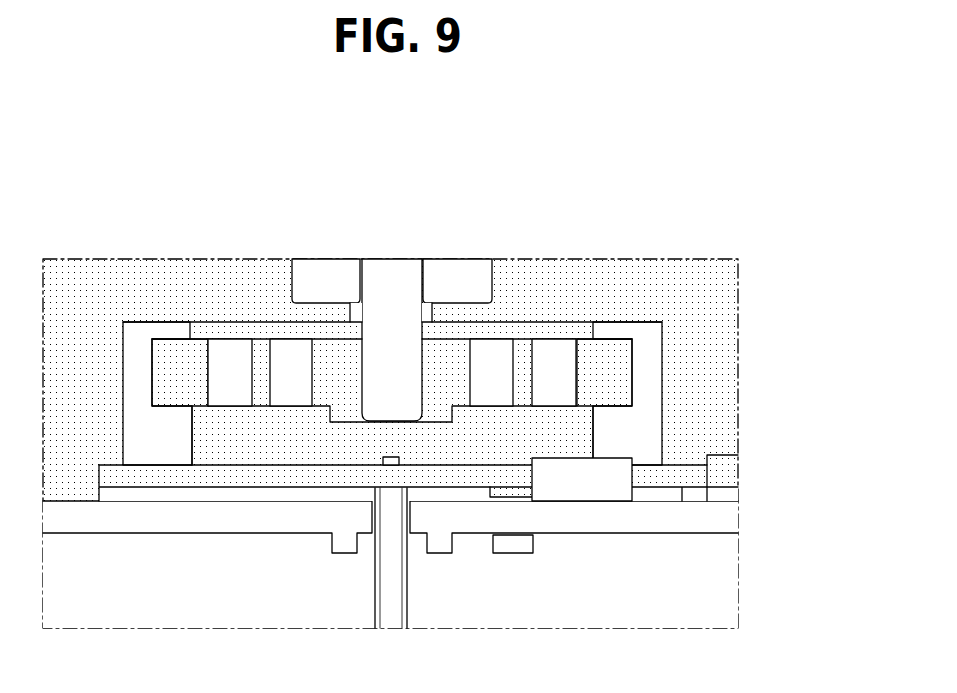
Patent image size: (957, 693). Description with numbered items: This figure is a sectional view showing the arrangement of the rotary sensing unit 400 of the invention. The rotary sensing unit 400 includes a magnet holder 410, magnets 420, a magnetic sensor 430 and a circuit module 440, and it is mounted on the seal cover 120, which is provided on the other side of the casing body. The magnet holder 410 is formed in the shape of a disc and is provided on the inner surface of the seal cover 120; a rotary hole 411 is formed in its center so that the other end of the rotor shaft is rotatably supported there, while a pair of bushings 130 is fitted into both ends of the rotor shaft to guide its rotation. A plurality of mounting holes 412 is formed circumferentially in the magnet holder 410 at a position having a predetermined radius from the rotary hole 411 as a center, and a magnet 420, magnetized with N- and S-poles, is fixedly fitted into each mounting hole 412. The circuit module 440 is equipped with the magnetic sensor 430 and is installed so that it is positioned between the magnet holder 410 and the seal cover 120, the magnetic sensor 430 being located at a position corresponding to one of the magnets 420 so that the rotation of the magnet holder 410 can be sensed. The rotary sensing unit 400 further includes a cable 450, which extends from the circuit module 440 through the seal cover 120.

The rotary sensing unit 400 is at (752, 312).
The magnet holder 410 is at (617, 369).
The rotary hole 411 is at (390, 412).
The mounting holes 412 is at (577, 375).
The magnet 420 is at (568, 368).
The magnetic sensor 430 is at (595, 493).
The circuit module 440 is at (687, 468).
The cable 450 is at (397, 603).
The seal cover 120 is at (400, 268).
The bushings 130 is at (329, 268).